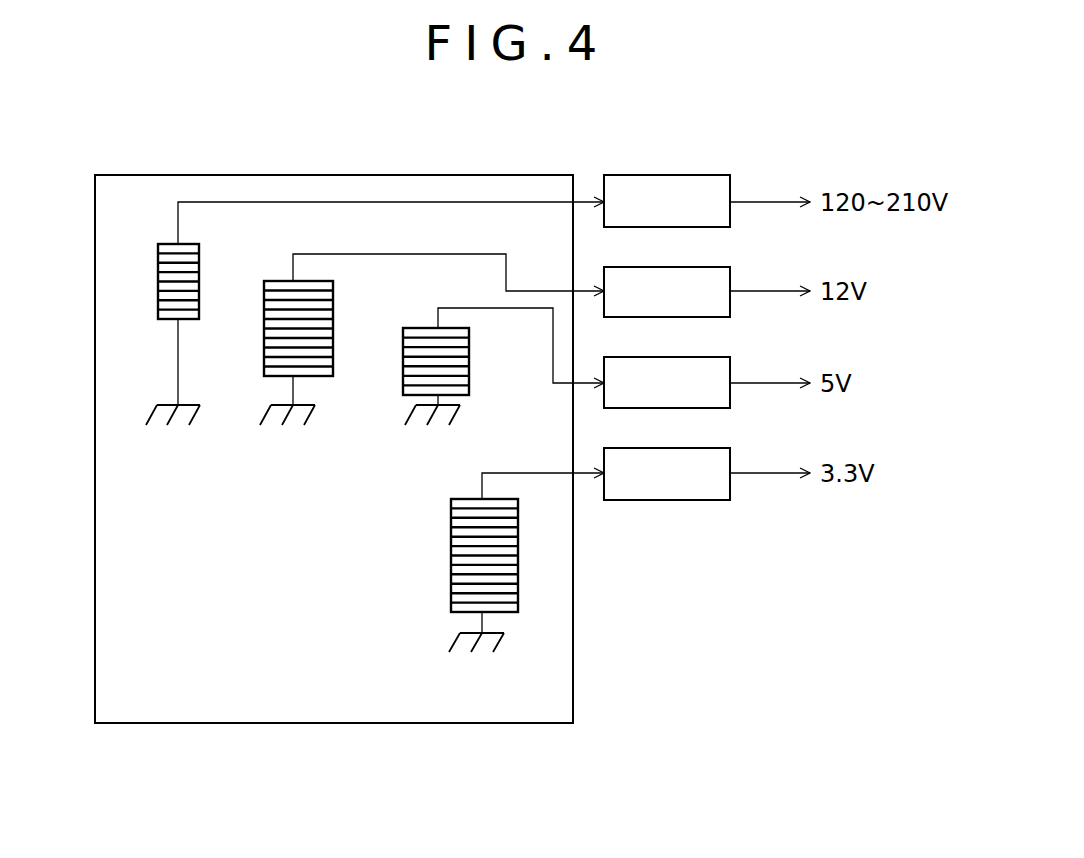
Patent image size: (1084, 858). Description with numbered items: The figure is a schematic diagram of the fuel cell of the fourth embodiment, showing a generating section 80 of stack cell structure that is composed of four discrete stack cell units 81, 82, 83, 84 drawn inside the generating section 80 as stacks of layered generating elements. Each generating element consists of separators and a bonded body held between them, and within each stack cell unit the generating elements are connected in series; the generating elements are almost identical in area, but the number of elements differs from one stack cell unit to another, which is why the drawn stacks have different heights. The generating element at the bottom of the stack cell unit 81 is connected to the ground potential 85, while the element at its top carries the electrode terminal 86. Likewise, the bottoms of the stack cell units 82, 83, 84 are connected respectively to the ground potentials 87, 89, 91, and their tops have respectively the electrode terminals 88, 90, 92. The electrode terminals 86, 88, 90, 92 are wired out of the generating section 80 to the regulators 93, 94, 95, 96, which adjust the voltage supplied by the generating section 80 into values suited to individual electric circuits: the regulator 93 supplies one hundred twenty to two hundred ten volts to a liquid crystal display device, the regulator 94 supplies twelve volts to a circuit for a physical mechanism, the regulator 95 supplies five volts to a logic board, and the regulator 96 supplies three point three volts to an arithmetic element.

The generating section 80 is at (188, 738).
The stack cell unit 81 is at (167, 432).
The stack cell unit 82 is at (282, 432).
The stack cell unit 83 is at (427, 432).
The stack cell unit 84 is at (471, 660).
The ground potential 85 is at (148, 421).
The electrode terminal 86 is at (180, 233).
The ground potential 87 is at (261, 421).
The electrode terminal 88 is at (295, 268).
The ground potential 89 is at (406, 421).
The electrode terminal 90 is at (436, 318).
The ground potential 91 is at (451, 648).
The electrode terminal 92 is at (484, 486).
The regulator 93 is at (706, 175).
The regulator 94 is at (706, 267).
The regulator 95 is at (706, 357).
The regulator 96 is at (706, 448).